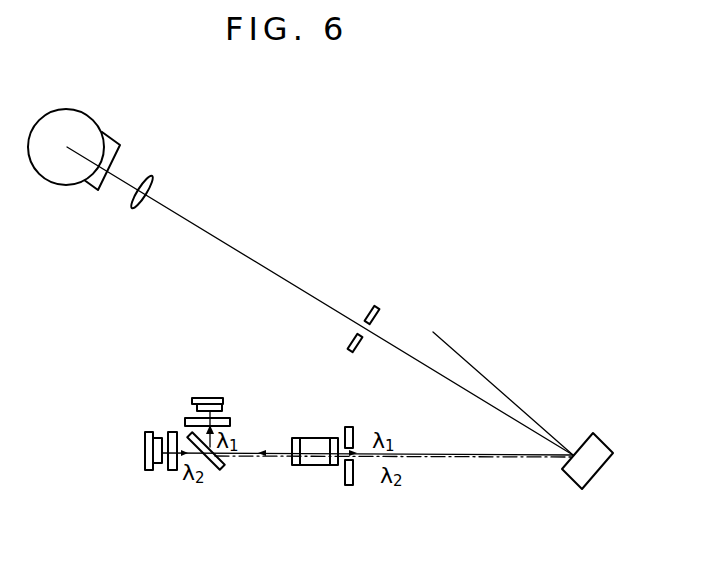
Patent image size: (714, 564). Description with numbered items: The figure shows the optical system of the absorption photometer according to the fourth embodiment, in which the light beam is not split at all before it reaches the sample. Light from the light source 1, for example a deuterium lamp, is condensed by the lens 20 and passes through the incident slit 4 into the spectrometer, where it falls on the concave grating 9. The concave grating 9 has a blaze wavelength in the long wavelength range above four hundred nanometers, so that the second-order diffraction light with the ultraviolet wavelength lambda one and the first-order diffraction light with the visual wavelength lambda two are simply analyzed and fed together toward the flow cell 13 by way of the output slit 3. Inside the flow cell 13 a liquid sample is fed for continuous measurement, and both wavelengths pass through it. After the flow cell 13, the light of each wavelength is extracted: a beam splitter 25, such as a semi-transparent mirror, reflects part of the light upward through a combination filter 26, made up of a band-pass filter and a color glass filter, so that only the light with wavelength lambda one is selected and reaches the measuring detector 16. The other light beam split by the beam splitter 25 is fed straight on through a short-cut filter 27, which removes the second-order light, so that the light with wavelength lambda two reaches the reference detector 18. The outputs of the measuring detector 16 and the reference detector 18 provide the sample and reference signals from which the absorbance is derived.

The light source 1 is at (65, 180).
The lens 20 is at (133, 209).
The incident slit 4 is at (351, 341).
The concave diffraction grating 9 is at (587, 489).
The reference detector 18 is at (145, 443).
The short-cut filter 27 is at (173, 471).
The beam splitter 25 is at (220, 466).
The combination filter 26 is at (186, 419).
The measuring detector 16 is at (205, 397).
The flow cell 13 is at (310, 467).
The output slit 3 is at (353, 432).